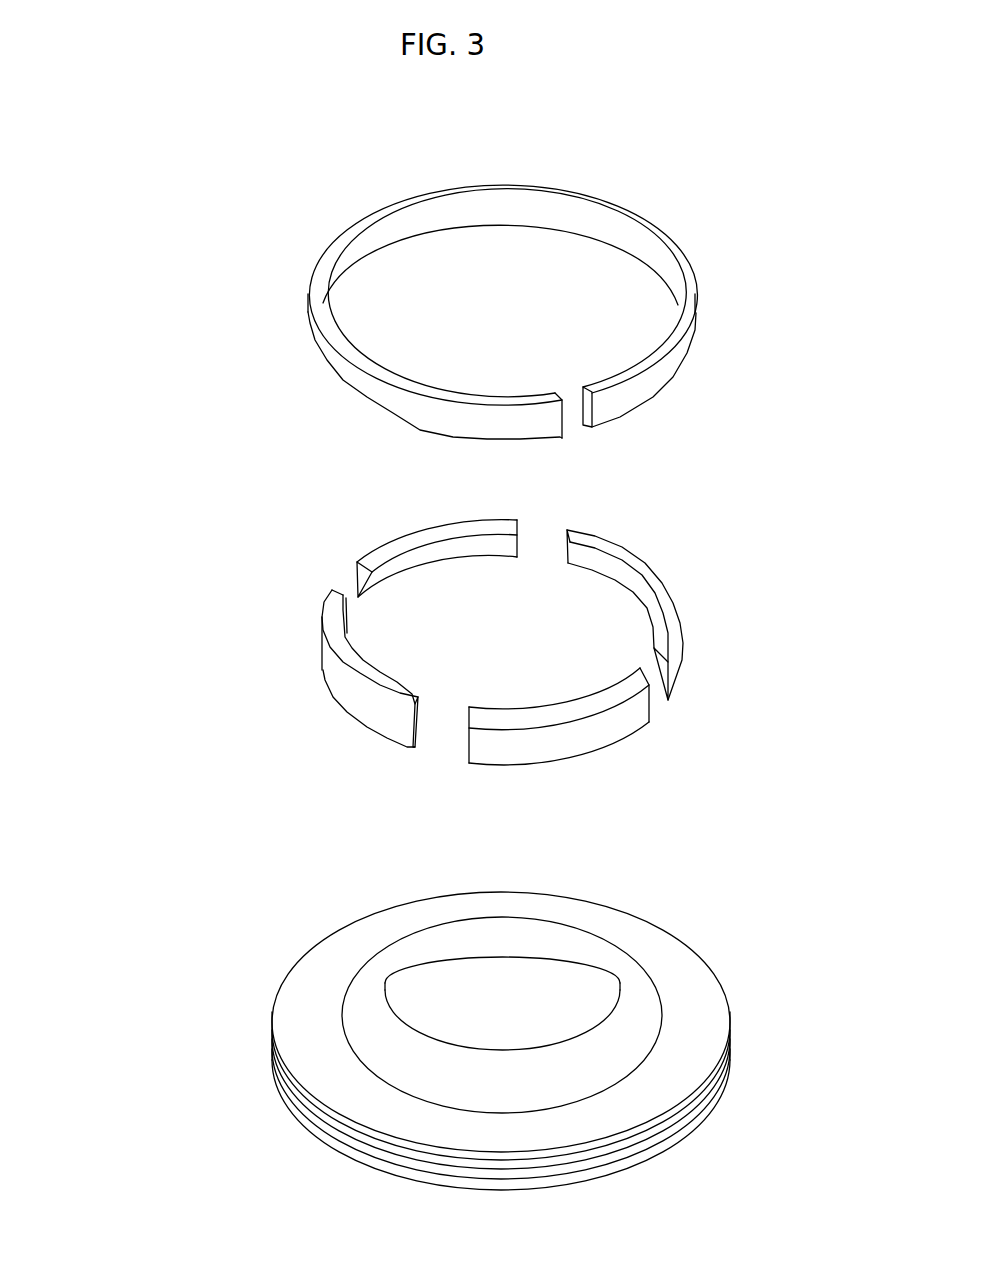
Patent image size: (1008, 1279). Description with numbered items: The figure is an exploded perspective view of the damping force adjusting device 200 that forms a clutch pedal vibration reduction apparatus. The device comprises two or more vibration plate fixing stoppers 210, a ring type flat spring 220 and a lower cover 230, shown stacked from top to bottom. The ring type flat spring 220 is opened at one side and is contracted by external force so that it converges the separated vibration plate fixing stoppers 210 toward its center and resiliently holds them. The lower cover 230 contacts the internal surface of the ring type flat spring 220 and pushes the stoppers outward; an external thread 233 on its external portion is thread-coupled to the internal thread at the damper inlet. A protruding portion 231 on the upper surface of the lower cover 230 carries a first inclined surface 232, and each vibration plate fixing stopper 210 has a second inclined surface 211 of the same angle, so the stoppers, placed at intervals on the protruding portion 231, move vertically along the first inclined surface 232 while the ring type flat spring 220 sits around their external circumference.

The damping force adjusting device 200 is at (190, 222).
The ring type flat spring 220 is at (693, 273).
The vibration plate fixing stopper 210 is at (678, 602).
The second inclined surface 211 is at (676, 679).
The lower cover 230 is at (725, 946).
The protruding portion 231 is at (429, 960).
The first inclined surface 232 is at (628, 990).
The external thread 233 is at (722, 1088).